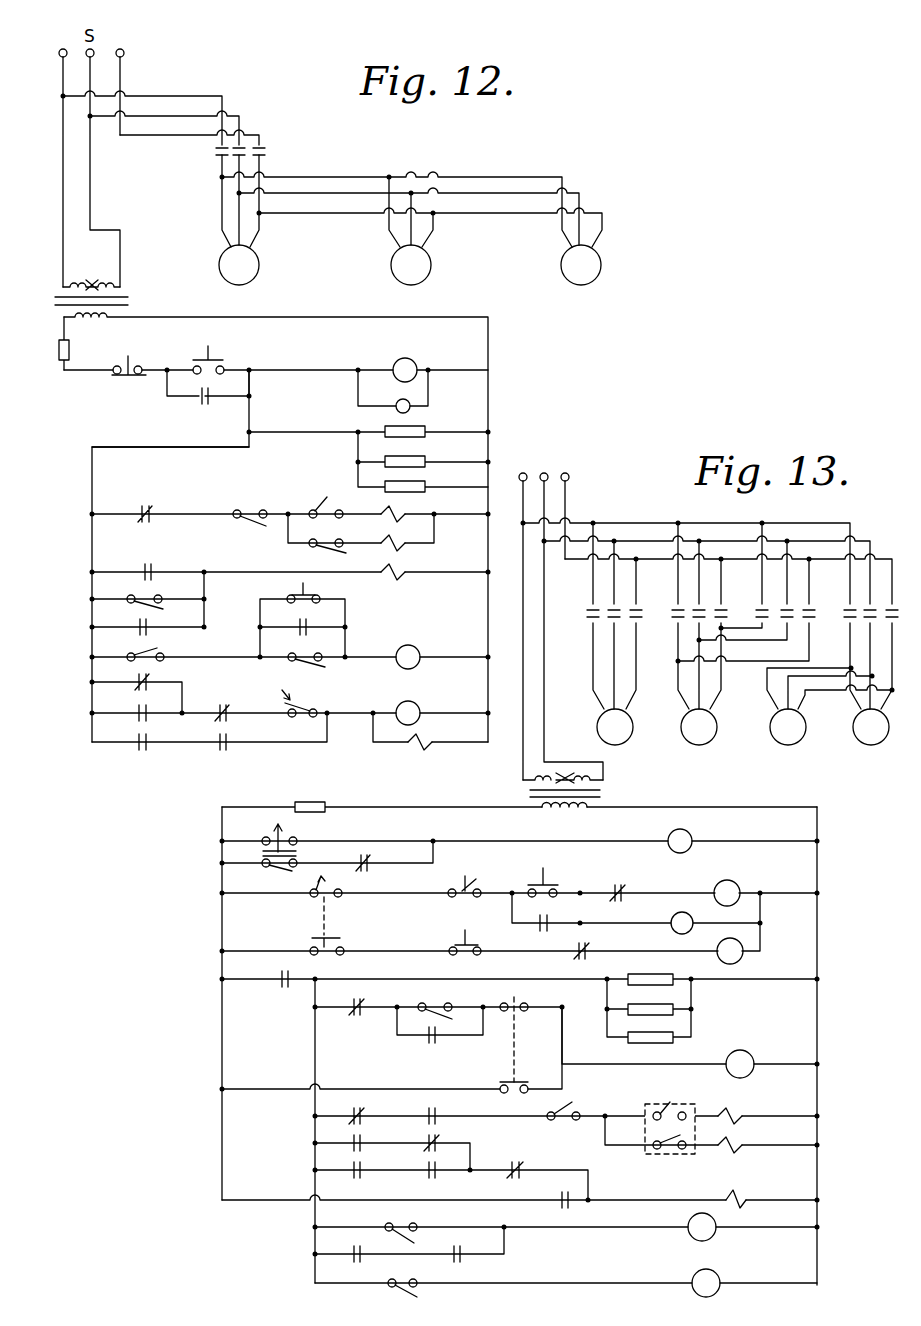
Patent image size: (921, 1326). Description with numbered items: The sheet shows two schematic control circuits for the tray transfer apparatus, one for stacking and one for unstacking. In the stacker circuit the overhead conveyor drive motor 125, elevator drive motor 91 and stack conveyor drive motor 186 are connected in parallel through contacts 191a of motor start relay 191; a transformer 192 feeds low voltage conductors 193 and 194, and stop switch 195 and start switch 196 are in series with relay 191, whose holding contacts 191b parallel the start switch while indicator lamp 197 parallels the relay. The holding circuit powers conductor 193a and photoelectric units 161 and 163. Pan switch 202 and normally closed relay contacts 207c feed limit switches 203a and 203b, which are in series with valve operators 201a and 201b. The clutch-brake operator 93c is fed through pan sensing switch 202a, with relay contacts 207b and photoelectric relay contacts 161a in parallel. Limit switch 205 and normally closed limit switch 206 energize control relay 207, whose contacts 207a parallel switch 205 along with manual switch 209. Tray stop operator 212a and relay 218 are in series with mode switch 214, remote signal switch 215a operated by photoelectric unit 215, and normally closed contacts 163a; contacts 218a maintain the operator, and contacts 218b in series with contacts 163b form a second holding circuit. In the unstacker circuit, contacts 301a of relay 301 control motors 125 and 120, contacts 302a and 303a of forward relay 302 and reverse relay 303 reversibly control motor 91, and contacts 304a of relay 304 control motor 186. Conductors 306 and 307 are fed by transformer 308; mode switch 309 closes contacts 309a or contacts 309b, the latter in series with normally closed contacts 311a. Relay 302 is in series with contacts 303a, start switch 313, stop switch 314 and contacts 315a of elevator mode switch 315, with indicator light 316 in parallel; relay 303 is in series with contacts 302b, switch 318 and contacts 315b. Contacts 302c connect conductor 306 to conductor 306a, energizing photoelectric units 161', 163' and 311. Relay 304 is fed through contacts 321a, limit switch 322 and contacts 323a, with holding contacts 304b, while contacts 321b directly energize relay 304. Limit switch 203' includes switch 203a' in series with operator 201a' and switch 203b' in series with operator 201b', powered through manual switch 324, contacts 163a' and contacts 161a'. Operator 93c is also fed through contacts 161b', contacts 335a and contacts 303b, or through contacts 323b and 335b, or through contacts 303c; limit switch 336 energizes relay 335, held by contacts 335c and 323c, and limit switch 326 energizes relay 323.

In FIG. 12, the motor start relay contacts 191a is at (266, 157).
In FIG. 12, the overhead conveyor drive motor 125 is at (259, 264).
In FIG. 13, the overhead conveyor drive motor 125 is at (862, 742).
In FIG. 12, the elevator drive motor 91 is at (431, 264).
In FIG. 13, the elevator drive motor 91 is at (711, 741).
In FIG. 12, the stack conveyor drive motor 186 is at (601, 264).
In FIG. 13, the stack conveyor drive motor 186 is at (626, 741).
In FIG. 13, the inlet tray conveyor drive motor 120 is at (788, 745).
In FIG. 12, the transformer 192 is at (130, 301).
In FIG. 13, the transformer 308 is at (600, 797).
In FIG. 12, the low voltage conductor 193 is at (70, 344).
In FIG. 12, the power conductor 193a is at (211, 447).
In FIG. 12, the low voltage conductor 194 is at (489, 352).
In FIG. 12, the stop switch 195 is at (135, 360).
In FIG. 12, the start switch 196 is at (220, 360).
In FIG. 12, the motor start relay 191 is at (412, 362).
In FIG. 12, the holding contacts 191b is at (208, 398).
In FIG. 12, the indicator lamp 197 is at (396, 400).
In FIG. 12, the photoelectric unit 161 is at (426, 422).
In FIG. 12, the photoelectric unit 163 is at (426, 452).
In FIG. 12, the remote photoelectric unit 215 is at (418, 483).
In FIG. 12, the normally closed relay contacts 207c is at (150, 504).
In FIG. 12, the pan switch 202 is at (258, 510).
In FIG. 12, the limit switch 203a is at (323, 499).
In FIG. 12, the limit switch 203b is at (307, 552).
In FIG. 12, the electroresponsive valve operator 201a is at (424, 506).
In FIG. 12, the electroresponsive valve operator 201b is at (421, 550).
In FIG. 12, the normally open relay contacts 207b is at (152, 562).
In FIG. 12, the clutch-brake electroresponsive operator 93c is at (398, 578).
In FIG. 13, the clutch-brake electroresponsive operator 93c is at (733, 1190).
In FIG. 12, the pan sensing switch 202a is at (152, 608).
In FIG. 12, the photoelectric relay contacts 161a is at (188, 635).
In FIG. 12, the normally closed limit switch 206 is at (150, 662).
In FIG. 12, the normally open limit switch 205 is at (305, 668).
In FIG. 12, the control relay 207 is at (404, 645).
In FIG. 12, the manual switch 209 is at (312, 592).
In FIG. 12, the normally open relay contacts 207a is at (312, 610).
In FIG. 12, the normally closed relay contacts 163a is at (123, 674).
In FIG. 12, the relay contacts 218a is at (136, 700).
In FIG. 12, the remote signal switch 215a is at (228, 703).
In FIG. 12, the mode switch 214 is at (316, 709).
In FIG. 12, the relay 218 is at (405, 701).
In FIG. 12, the normally open relay contacts 163b is at (136, 748).
In FIG. 12, the normally open relay contacts 218b is at (230, 748).
In FIG. 12, the tray stop valve operator 212a is at (424, 750).
In FIG. 13, the relay contacts 304a is at (586, 612).
In FIG. 13, the forward relay contacts 302a is at (672, 608).
In FIG. 13, the reverse relay contacts 303a is at (758, 608).
In FIG. 13, the relay contacts 301a is at (845, 608).
In FIG. 13, the power conductor 306 is at (220, 824).
In FIG. 13, the power conductor 307 is at (818, 832).
In FIG. 13, the three-position mode switch 309 is at (300, 836).
In FIG. 13, the mode switch contacts 309a is at (296, 845).
In FIG. 13, the mode switch contacts 309b is at (290, 870).
In FIG. 13, the relay 301 is at (686, 832).
In FIG. 13, the normally closed relay contacts 311a is at (372, 870).
In FIG. 13, the elevator mode switch contacts 315a is at (314, 896).
In FIG. 13, the elevator mode switch 315 is at (340, 917).
In FIG. 13, the stop switch 314 is at (470, 884).
In FIG. 13, the start switch 313 is at (548, 882).
In FIG. 13, the forward relay 302 is at (735, 882).
In FIG. 13, the indicator light 316 is at (676, 916).
In FIG. 13, the normally closed relay contacts 302b is at (590, 946).
In FIG. 13, the reverse relay 303 is at (740, 960).
In FIG. 13, the elevator mode switch contacts 315b is at (344, 946).
In FIG. 13, the manually operable switch 318 is at (452, 946).
In FIG. 13, the relay contacts 302c is at (290, 985).
In FIG. 13, the conductor 306a is at (313, 1003).
In FIG. 13, the photoelectric unit 161' is at (669, 968).
In FIG. 13, the photoelectric unit 163' is at (681, 998).
In FIG. 13, the photoelectric unit 311 is at (666, 1040).
In FIG. 13, the normally closed relay contacts 323a is at (362, 1000).
In FIG. 13, the normally open limit switch 322 is at (440, 1002).
In FIG. 13, the relay contacts 304b is at (438, 1038).
In FIG. 13, the mode switch contacts 321a is at (518, 1014).
In FIG. 13, the mode switch contacts 321b is at (500, 1086).
In FIG. 13, the relay 304 is at (742, 1050).
In FIG. 13, the normally closed relay contacts 161a' is at (385, 1106).
In FIG. 13, the normally open relay contacts 163a' is at (462, 1106).
In FIG. 13, the manually operable switch 324 is at (560, 1124).
In FIG. 13, the limit switch 203' is at (645, 1117).
In FIG. 13, the normally closed switch 203a' is at (682, 1096).
In FIG. 13, the normally open switch 203b' is at (677, 1160).
In FIG. 13, the valve operator 201a' is at (752, 1101).
In FIG. 13, the valve operator 201b' is at (762, 1136).
In FIG. 13, the relay contacts 161b' is at (388, 1135).
In FIG. 13, the normally closed relay contacts 335a is at (440, 1136).
In FIG. 13, the normally open relay contacts 323b is at (362, 1176).
In FIG. 13, the relay contacts 335b is at (437, 1176).
In FIG. 13, the normally closed relay contacts 303b is at (524, 1168).
In FIG. 13, the normally open relay contacts 303c is at (570, 1206).
In FIG. 13, the limit switch 336 is at (405, 1224).
In FIG. 13, the relay 335 is at (712, 1238).
In FIG. 13, the normally open contacts 323c is at (362, 1260).
In FIG. 13, the normally open contacts 335c is at (462, 1260).
In FIG. 13, the limit switch 326 is at (403, 1290).
In FIG. 13, the relay 323 is at (714, 1272).